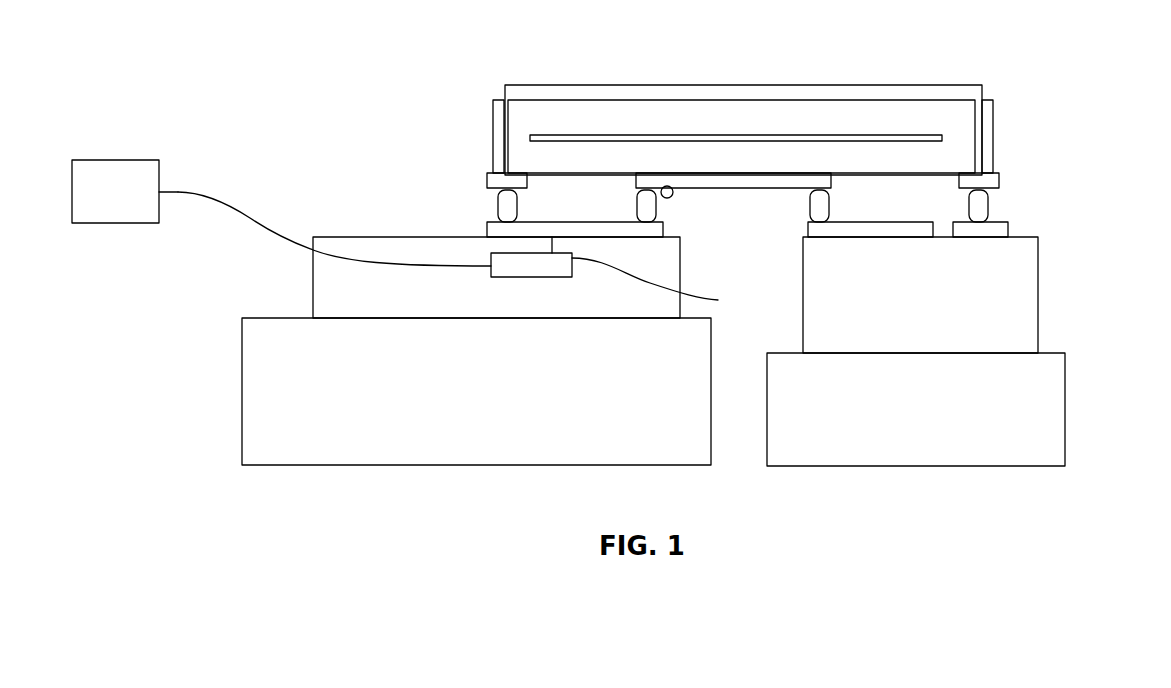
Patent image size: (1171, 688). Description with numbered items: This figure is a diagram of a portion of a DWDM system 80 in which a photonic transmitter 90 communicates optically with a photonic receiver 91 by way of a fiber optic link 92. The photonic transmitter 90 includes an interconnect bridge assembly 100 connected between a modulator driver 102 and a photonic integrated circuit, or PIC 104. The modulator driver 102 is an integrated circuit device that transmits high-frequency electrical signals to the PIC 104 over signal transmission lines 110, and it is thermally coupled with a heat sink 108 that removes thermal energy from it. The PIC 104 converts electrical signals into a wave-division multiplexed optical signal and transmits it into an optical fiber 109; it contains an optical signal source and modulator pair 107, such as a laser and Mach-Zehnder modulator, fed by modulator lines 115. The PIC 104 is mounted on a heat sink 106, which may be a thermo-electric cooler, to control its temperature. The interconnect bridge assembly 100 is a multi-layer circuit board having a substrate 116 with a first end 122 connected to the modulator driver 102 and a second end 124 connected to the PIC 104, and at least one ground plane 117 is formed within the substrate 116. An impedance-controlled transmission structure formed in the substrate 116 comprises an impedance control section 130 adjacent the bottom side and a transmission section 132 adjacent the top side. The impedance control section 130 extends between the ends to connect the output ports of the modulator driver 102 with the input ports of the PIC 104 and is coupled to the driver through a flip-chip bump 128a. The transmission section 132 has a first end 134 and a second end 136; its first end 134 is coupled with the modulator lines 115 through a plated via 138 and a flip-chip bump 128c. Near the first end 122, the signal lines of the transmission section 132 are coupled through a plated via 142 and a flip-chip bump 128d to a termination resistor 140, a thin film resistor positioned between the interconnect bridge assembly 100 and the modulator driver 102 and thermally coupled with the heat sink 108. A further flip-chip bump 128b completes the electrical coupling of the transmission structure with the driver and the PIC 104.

The DWDM system 80 is at (163, 122).
The photonic receiver 91 is at (97, 158).
The fiber optic link 92 is at (178, 190).
The optical fiber 109 is at (250, 220).
The optical signal source and modulator pair 107 is at (629, 276).
The PIC 104 is at (313, 270).
The heat sink 106 is at (242, 422).
The photonic transmitter 90 is at (333, 468).
The modulator driver 102 is at (1038, 307).
The heat sink 108 is at (1065, 390).
The modulator line 115 is at (600, 222).
The signal transmission line 110 is at (870, 222).
The termination resistor 140 is at (1003, 222).
The interconnect bridge assembly 100 is at (802, 83).
The transmission section 132 is at (565, 92).
The substrate 116 is at (635, 92).
The ground plane 117 is at (732, 138).
The impedance control section 130 is at (663, 188).
The first end of the transmission section 134 is at (496, 100).
The plated via 138 is at (499, 125).
The second end of the substrate 124 is at (493, 137).
The second end of the transmission section 136 is at (977, 85).
The plated via 142 is at (993, 120).
The first end of the substrate 122 is at (993, 148).
The flip-chip bump 128a is at (808, 200).
The flip-chip bump 128b is at (653, 215).
The flip-chip bump 128c is at (500, 198).
The flip-chip bump 128d is at (988, 200).